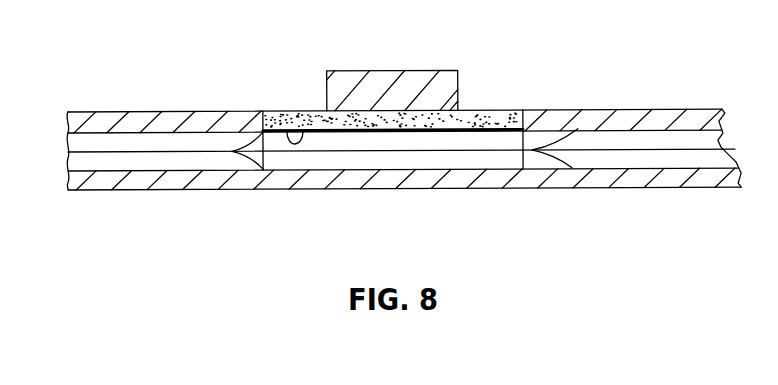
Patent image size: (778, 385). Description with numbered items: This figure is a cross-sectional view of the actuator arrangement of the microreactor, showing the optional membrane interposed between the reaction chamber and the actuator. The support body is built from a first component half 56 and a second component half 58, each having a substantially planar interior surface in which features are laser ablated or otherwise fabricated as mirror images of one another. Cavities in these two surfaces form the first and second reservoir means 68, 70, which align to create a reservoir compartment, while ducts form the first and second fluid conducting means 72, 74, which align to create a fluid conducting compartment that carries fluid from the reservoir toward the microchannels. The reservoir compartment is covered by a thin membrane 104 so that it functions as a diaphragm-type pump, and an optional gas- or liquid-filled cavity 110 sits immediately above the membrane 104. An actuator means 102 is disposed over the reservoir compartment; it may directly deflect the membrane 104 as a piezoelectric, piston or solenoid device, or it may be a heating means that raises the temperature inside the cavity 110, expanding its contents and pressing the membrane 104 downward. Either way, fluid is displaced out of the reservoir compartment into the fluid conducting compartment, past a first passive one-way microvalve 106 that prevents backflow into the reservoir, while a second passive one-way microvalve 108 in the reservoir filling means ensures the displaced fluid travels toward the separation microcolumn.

The first component half 56 is at (86, 190).
The second component half 58 is at (98, 121).
The first reservoir means 68 is at (476, 168).
The second reservoir means 70 is at (446, 134).
The first fluid conducting means 72 is at (106, 171).
The second fluid conducting means 74 is at (118, 132).
The actuator means 102 is at (420, 72).
The membrane 104 is at (306, 125).
The first passive one-way microvalve 106 is at (240, 165).
The second passive one-way microvalve 108 is at (563, 131).
The cavity 110 is at (489, 118).